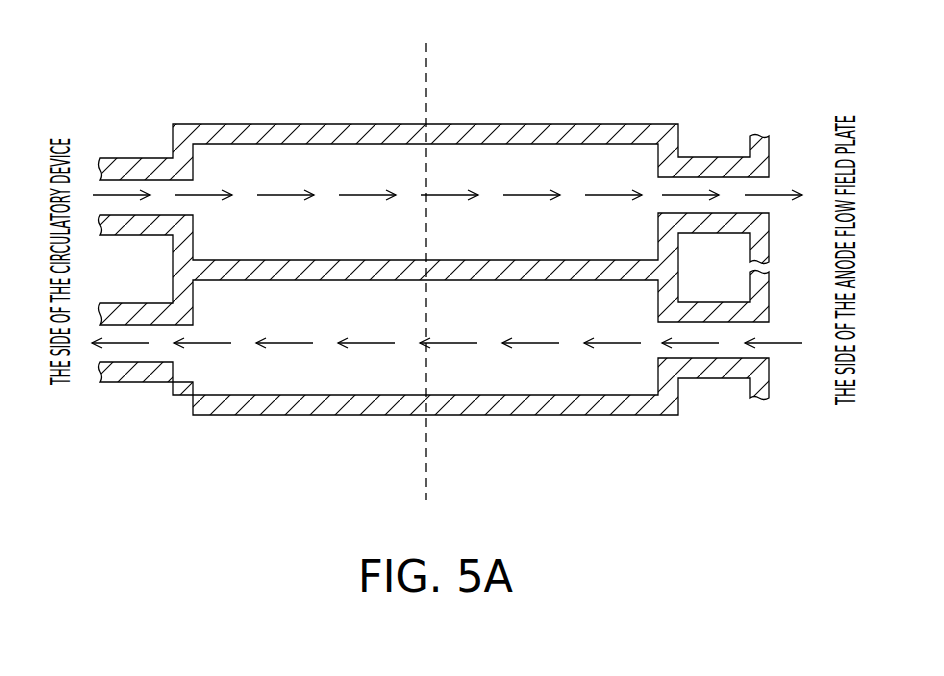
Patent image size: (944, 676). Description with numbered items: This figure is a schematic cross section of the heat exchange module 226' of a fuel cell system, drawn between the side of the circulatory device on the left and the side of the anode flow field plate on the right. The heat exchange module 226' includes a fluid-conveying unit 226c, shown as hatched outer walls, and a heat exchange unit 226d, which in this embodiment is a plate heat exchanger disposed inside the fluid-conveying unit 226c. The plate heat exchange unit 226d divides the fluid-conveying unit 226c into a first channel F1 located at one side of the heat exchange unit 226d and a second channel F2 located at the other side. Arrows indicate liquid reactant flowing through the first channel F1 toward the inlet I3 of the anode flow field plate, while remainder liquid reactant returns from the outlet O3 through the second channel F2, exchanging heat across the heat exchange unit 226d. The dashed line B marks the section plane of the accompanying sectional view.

The heat exchange module 226' is at (434, 212).
The fluid-conveying unit 226c is at (236, 136).
The heat exchange unit 226d is at (252, 270).
The first channel F1 is at (587, 168).
The second channel F2 is at (507, 368).
The inlet I3 is at (763, 183).
The outlet O3 is at (762, 350).
The section line B- B is at (424, 55).